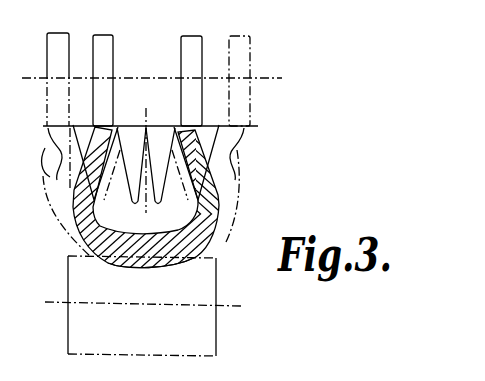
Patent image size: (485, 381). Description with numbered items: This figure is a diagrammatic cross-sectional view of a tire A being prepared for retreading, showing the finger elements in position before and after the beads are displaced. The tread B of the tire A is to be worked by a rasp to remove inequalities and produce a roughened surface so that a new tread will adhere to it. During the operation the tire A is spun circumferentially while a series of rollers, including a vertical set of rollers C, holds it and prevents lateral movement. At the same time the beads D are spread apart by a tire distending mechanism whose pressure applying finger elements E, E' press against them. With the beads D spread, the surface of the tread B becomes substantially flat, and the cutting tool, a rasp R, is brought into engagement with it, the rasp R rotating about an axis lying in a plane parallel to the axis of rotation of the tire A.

The tire A is at (206, 237).
The tread B is at (174, 265).
The vertical set of rollers C is at (195, 26).
The beads D is at (226, 126).
The pressure applying finger element E is at (166, 143).
The pressure applying finger element E' is at (129, 192).
The rasp R is at (212, 334).